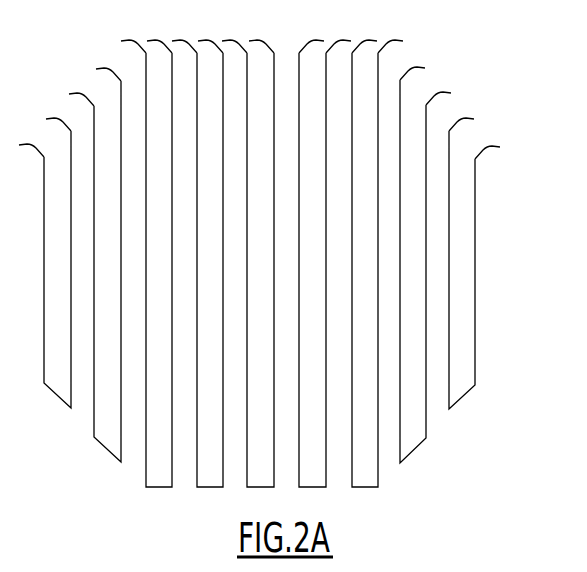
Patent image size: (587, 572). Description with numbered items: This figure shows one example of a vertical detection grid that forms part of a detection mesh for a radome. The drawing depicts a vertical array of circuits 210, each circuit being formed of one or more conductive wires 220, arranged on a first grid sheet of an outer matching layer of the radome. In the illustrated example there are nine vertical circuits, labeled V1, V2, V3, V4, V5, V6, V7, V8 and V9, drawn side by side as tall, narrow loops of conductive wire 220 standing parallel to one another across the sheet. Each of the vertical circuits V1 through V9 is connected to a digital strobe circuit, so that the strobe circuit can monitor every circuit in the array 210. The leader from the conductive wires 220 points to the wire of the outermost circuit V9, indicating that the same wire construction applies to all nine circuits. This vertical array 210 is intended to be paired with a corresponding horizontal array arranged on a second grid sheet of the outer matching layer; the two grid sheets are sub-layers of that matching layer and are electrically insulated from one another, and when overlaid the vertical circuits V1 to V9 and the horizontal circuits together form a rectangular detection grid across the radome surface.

The vertical array of circuits 210 is at (333, 38).
The conductive wires 220 is at (296, 263).
The first vertical circuit V1 is at (45, 263).
The second vertical circuit V2 is at (95, 265).
The third vertical circuit V3 is at (146, 263).
The fourth vertical circuit V4 is at (197, 263).
The fifth vertical circuit V5 is at (248, 263).
The sixth vertical circuit V6 is at (325, 263).
The seventh vertical circuit V7 is at (377, 263).
The eighth vertical circuit V8 is at (425, 265).
The ninth vertical circuit V9 is at (474, 263).